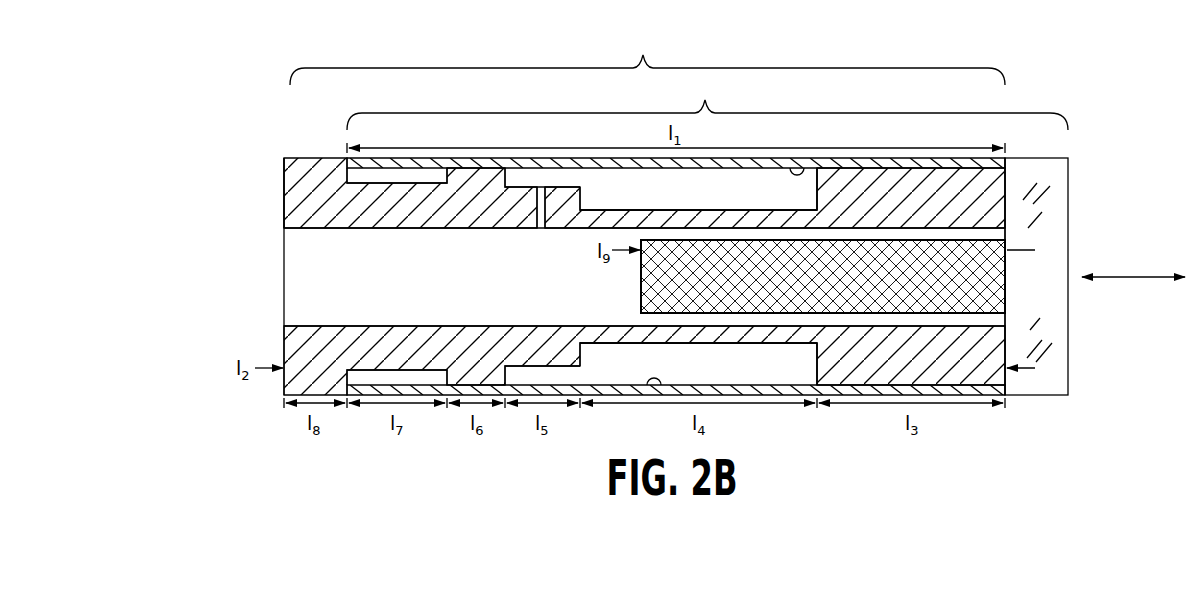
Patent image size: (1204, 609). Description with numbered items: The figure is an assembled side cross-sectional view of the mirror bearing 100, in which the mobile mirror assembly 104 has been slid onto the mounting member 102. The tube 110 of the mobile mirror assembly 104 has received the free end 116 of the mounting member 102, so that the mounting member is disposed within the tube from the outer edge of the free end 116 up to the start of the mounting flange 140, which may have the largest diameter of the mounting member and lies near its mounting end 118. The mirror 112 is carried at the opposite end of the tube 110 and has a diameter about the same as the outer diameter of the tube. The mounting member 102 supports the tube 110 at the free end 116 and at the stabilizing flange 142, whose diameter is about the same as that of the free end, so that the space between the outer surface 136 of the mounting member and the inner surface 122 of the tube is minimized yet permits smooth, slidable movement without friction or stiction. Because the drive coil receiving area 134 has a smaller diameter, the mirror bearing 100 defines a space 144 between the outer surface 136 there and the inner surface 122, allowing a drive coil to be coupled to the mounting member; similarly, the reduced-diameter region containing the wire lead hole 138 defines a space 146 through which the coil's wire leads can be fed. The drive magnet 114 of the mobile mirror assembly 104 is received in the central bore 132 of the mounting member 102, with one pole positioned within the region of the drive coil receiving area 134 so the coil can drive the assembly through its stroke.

The mirror bearing 100 is at (980, 50).
The mounting member 102 is at (647, 57).
The mobile mirror assembly 104 is at (707, 103).
The tube 110 is at (576, 158).
The mirror 112 is at (1070, 175).
The drive magnet 114 is at (640, 288).
The free end 116 is at (1023, 160).
The mounting end 118 is at (284, 177).
The inner surface 122 is at (795, 166).
The bore 132 is at (298, 250).
The drive coil receiving area 134 is at (640, 205).
The outer surface 136 is at (770, 205).
The wire lead hole 138 is at (538, 188).
The mounting flange 140 is at (318, 172).
The stabilizing flange 142 is at (476, 173).
The space 144 is at (737, 182).
The space 146 is at (544, 186).